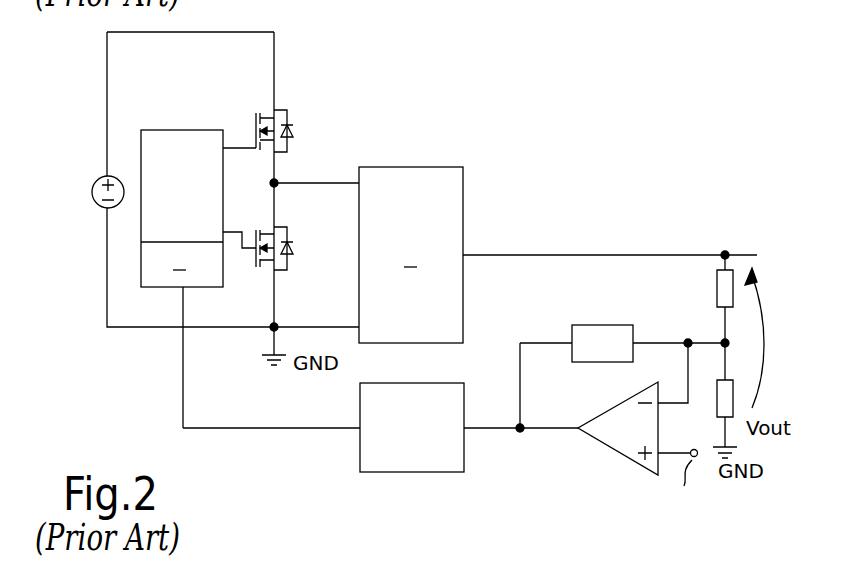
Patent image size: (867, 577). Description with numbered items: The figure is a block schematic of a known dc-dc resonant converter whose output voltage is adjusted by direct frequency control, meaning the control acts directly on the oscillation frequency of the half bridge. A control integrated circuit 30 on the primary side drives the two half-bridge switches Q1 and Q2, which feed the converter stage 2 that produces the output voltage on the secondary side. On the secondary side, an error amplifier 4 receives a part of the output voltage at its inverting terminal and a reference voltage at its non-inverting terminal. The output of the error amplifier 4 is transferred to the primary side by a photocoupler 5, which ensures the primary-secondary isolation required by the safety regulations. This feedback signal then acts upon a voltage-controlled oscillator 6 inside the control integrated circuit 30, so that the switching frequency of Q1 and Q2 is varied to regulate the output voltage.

The control integrated circuit 30 is at (183, 130).
The voltage-controlled oscillator 6 is at (198, 279).
The high-side switching transistor Q1 is at (288, 140).
The low-side switching transistor Q2 is at (288, 255).
The output filter stage 2 is at (515, 255).
The error amplifier 4 is at (627, 442).
The photocoupler 5 is at (400, 472).